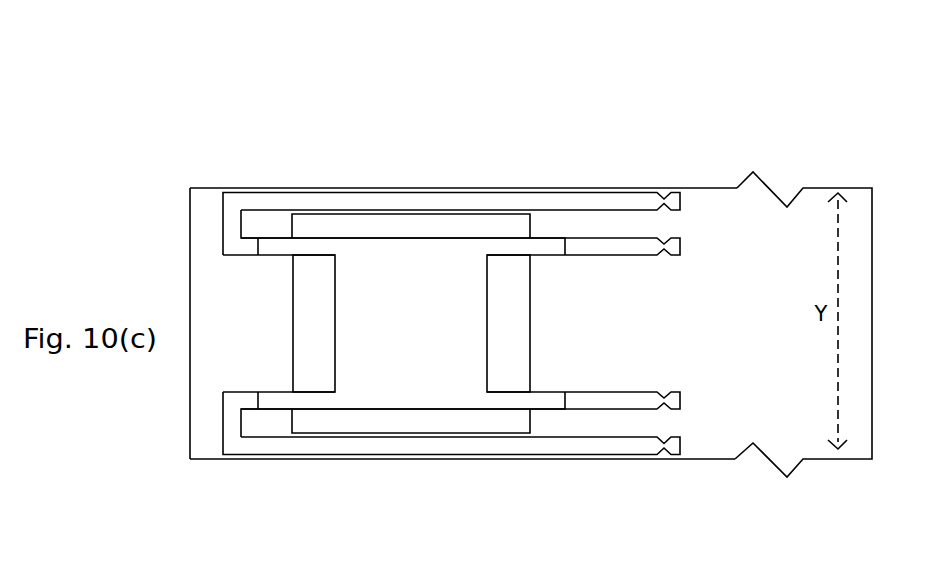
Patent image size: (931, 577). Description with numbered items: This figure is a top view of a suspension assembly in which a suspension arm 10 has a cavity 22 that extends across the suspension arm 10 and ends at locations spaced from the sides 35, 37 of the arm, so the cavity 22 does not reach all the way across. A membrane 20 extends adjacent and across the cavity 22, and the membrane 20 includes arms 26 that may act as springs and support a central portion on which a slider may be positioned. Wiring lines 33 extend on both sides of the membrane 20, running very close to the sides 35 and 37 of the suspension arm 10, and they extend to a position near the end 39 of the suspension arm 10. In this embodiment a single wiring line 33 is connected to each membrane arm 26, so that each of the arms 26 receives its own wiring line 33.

The suspension arm 10 is at (714, 333).
The membrane 20 is at (364, 341).
The cavity 22 is at (468, 221).
The arms 26 is at (275, 248).
The wiring lines 33 is at (355, 203).
The side 35 is at (423, 189).
The side 37 is at (422, 459).
The end 39 is at (190, 258).